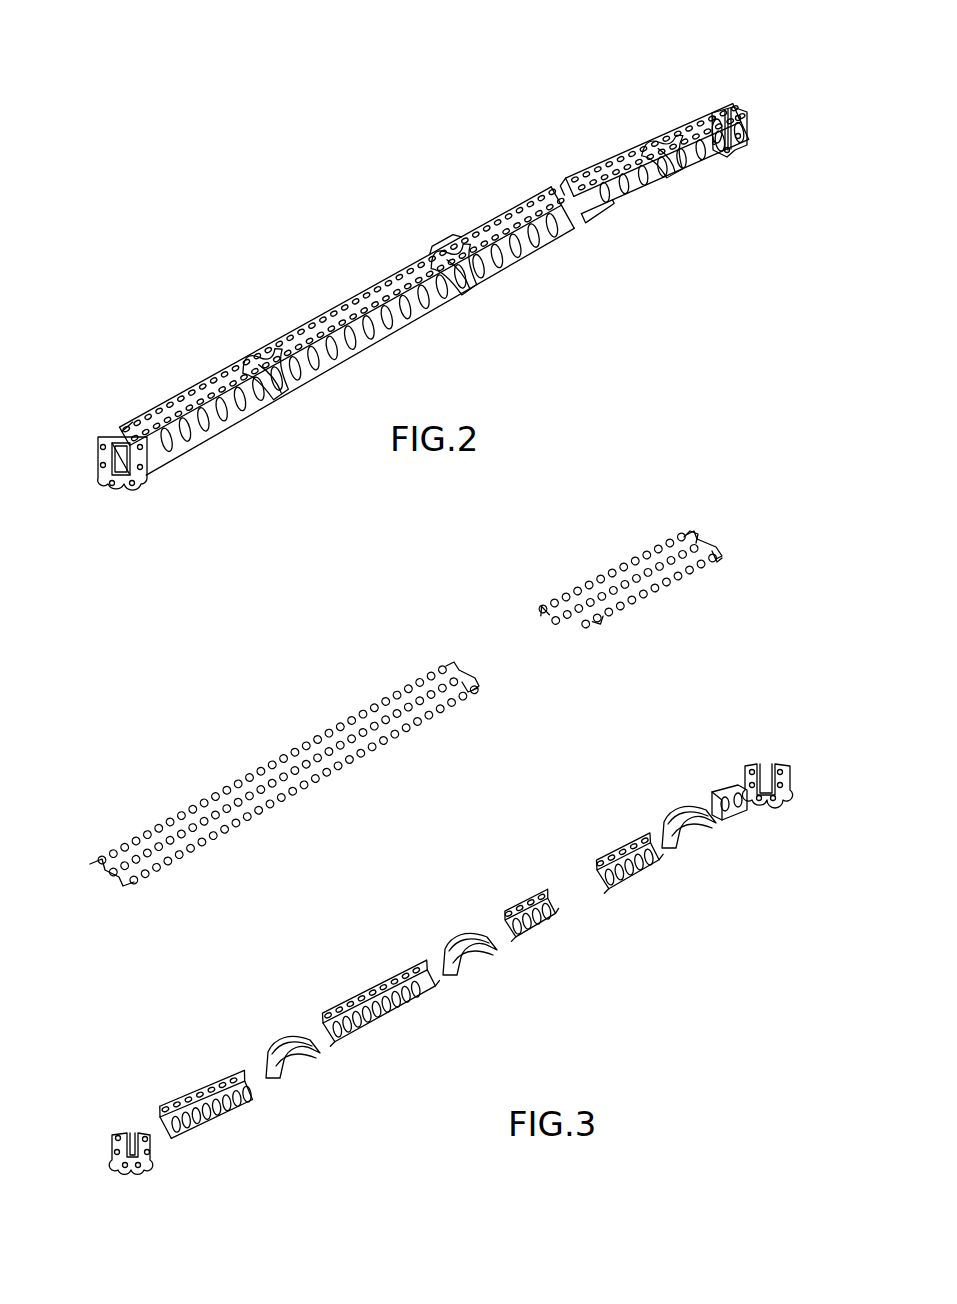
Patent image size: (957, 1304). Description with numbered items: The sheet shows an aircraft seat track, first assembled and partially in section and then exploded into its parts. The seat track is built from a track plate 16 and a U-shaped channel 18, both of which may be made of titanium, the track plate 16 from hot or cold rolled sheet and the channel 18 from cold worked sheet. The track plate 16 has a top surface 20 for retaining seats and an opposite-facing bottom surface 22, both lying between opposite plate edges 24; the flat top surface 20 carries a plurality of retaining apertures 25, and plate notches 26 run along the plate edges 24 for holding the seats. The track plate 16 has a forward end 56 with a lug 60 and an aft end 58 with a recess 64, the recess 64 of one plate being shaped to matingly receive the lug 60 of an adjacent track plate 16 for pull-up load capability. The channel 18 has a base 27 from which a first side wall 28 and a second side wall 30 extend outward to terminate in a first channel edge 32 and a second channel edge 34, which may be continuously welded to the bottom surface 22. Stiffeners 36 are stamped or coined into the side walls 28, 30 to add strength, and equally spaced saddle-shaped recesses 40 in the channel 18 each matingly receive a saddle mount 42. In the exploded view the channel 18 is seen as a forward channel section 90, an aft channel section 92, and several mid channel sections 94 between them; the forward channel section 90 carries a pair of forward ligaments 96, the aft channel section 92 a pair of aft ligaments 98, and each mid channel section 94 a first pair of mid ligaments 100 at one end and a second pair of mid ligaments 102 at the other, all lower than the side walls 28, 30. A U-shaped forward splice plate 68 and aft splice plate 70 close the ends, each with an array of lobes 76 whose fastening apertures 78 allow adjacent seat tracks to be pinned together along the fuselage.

In FIG. 2, the track plate 16 is at (645, 140).
In FIG. 3, the track plate 16 is at (368, 690).
In FIG. 2, the channel 18 is at (203, 443).
In FIG. 2, the top surface 20 is at (190, 390).
In FIG. 3, the top surface 20 is at (448, 668).
In FIG. 2, the bottom surface 22 is at (567, 188).
In FIG. 3, the bottom surface 22 is at (478, 692).
In FIG. 2, the plate edges 24 is at (317, 314).
In FIG. 3, the plate edges 24 is at (140, 838).
In FIG. 2, the retaining apertures 25 is at (173, 408).
In FIG. 3, the retaining apertures 25 is at (217, 815).
In FIG. 2, the plate notches 26 is at (336, 307).
In FIG. 3, the plate notches 26 is at (276, 806).
In FIG. 2, the base 27 is at (576, 214).
In FIG. 2, the first side wall 28 is at (580, 183).
In FIG. 3, the first side wall 28 is at (160, 1127).
In FIG. 2, the second side wall 30 is at (618, 197).
In FIG. 3, the second side wall 30 is at (178, 1137).
In FIG. 3, the first channel edge 32 is at (190, 1100).
In FIG. 3, the second channel edge 34 is at (218, 1090).
In FIG. 2, the stiffeners 36 is at (303, 350).
In FIG. 3, the stiffeners 36 is at (237, 1100).
In FIG. 2, the saddle-shaped recesses 40 is at (457, 268).
In FIG. 2, the saddle mounts 42 is at (263, 390).
In FIG. 3, the saddle mounts 42 is at (303, 1057).
In FIG. 2, the forward end 56 is at (140, 436).
In FIG. 3, the forward end 56 is at (103, 885).
In FIG. 2, the aft end 58 is at (737, 107).
In FIG. 3, the aft end 58 is at (708, 536).
In FIG. 2, the lug 60 is at (117, 432).
In FIG. 2, the recess 64 is at (718, 105).
In FIG. 2, the forward splice plate 68 is at (137, 475).
In FIG. 3, the forward splice plate 68 is at (148, 1163).
In FIG. 2, the aft splice plate 70 is at (746, 111).
In FIG. 3, the aft splice plate 70 is at (780, 767).
In FIG. 2, the lobes 76 is at (420, 314).
In FIG. 3, the lobes 76 is at (452, 964).
In FIG. 2, the fastening apertures 78 is at (415, 314).
In FIG. 3, the fastening apertures 78 is at (448, 964).
In FIG. 3, the forward channel section 90 is at (194, 1091).
In FIG. 3, the aft channel section 92 is at (785, 802).
In FIG. 3, the mid channel sections 94 is at (459, 946).
In FIG. 3, the forward ligaments 96 is at (222, 1090).
In FIG. 3, the aft ligaments 98 is at (717, 795).
In FIG. 3, the first pair of mid ligaments 100 is at (325, 1020).
In FIG. 3, the second pair of mid ligaments 102 is at (412, 968).